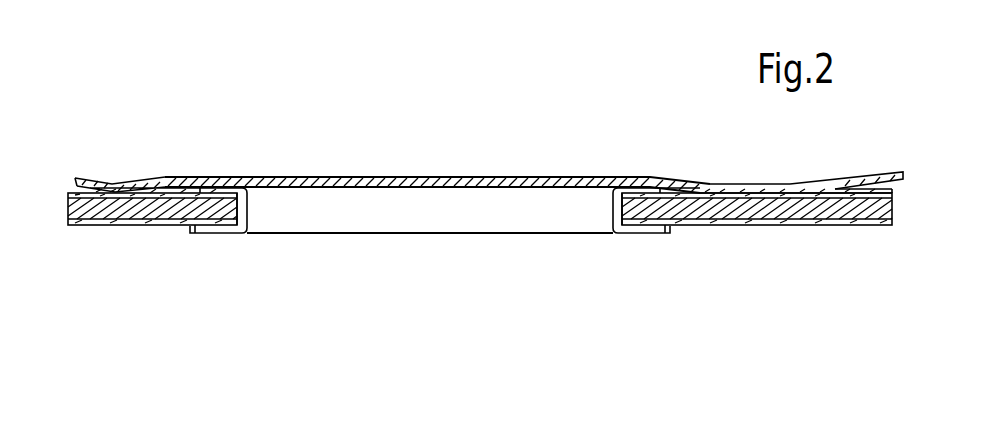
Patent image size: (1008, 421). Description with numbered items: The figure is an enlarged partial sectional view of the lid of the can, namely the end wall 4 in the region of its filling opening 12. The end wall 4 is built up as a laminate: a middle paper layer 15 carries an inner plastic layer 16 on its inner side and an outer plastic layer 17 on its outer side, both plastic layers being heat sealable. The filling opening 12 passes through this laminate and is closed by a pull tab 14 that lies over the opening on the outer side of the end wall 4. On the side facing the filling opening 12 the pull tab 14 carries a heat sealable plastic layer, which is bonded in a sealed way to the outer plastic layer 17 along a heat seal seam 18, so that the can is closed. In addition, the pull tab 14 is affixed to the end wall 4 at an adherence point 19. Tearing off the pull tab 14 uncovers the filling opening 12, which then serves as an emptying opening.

The end wall 4 is at (224, 152).
The filling opening 12 is at (373, 226).
The pull tab 14 is at (385, 182).
The middle paper layer 15 is at (765, 224).
The inner plastic layer 16 is at (707, 228).
The outer plastic layer 17 is at (865, 181).
The heat seal seam 18 is at (732, 186).
The adherence point 19 is at (825, 184).